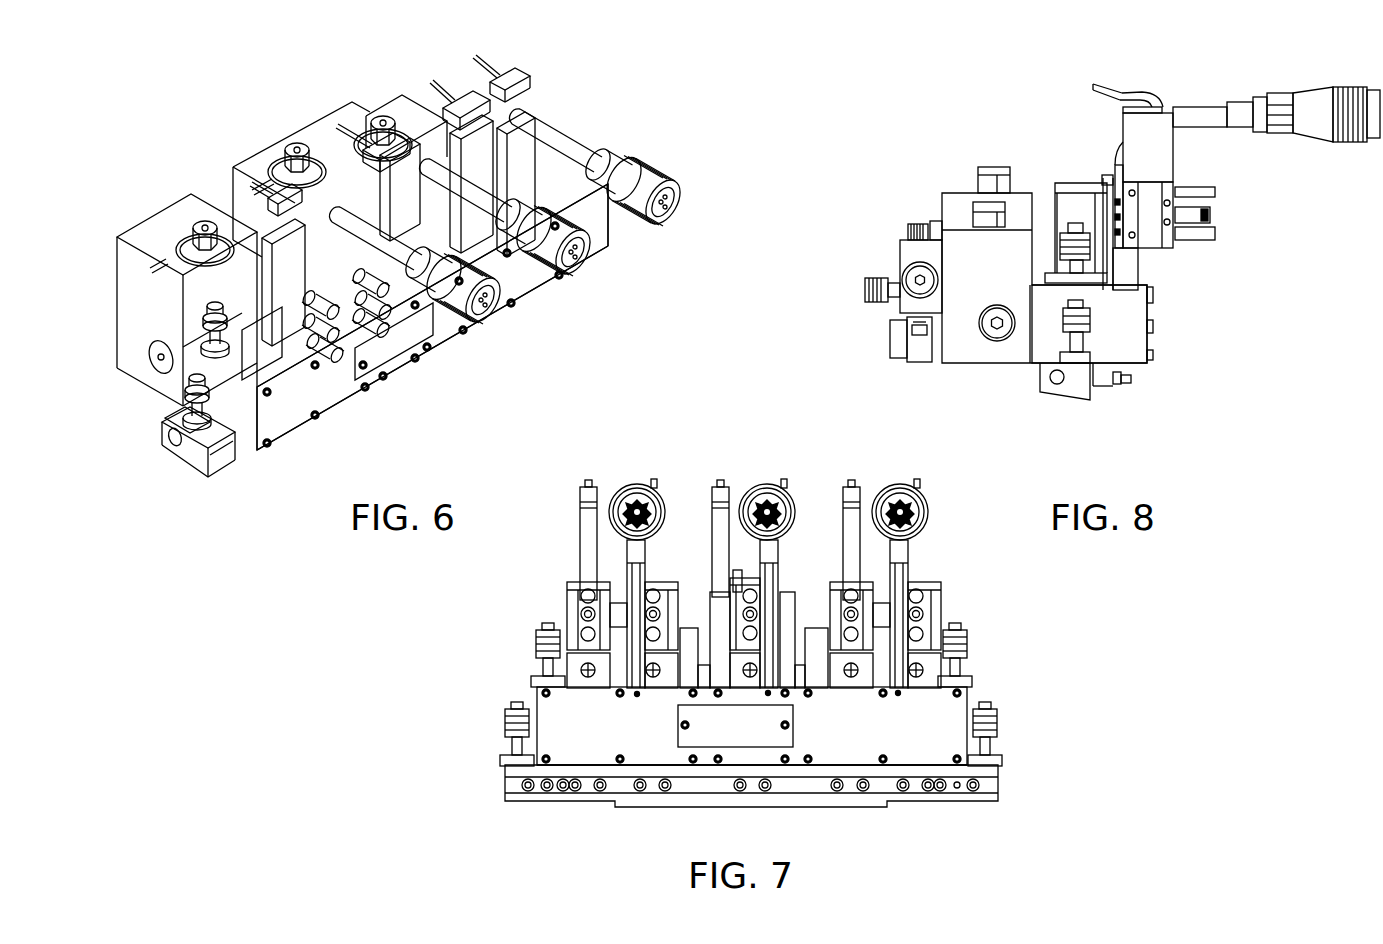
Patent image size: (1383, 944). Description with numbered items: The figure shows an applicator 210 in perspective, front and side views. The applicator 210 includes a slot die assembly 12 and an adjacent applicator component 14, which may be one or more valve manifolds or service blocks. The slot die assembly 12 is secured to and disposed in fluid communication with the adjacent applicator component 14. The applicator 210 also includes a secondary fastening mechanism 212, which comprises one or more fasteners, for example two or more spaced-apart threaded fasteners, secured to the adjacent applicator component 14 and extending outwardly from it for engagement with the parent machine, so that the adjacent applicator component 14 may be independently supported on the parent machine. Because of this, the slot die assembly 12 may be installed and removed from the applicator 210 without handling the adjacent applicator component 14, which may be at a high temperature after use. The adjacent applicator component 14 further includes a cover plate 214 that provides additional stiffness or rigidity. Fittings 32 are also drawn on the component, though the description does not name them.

In FIG. 6, the applicator 210 is at (251, 127).
In FIG. 7, the applicator 210 is at (757, 462).
In FIG. 8, the applicator 210 is at (982, 143).
In FIG. 6, the secondary fastening mechanism 212 is at (205, 322).
In FIG. 7, the secondary fastening mechanism 212 is at (537, 643).
In FIG. 8, the secondary fastening mechanism 212 is at (1068, 227).
In FIG. 6, the cover plate 214 is at (327, 397).
In FIG. 7, the cover plate 214 is at (593, 758).
In FIG. 6, the adjacent applicator component 14 is at (247, 437).
In FIG. 7, the adjacent applicator component 14 is at (968, 690).
In FIG. 8, the adjacent applicator component 14 is at (1132, 328).
In FIG. 6, the slot die assembly 12 is at (163, 443).
In FIG. 7, the slot die assembly 12 is at (887, 807).
In FIG. 8, the slot die assembly 12 is at (1130, 387).
In FIG. 6, the fitting 32 is at (182, 400).
In FIG. 7, the fitting 32 is at (502, 730).
In FIG. 8, the fitting 32 is at (1063, 320).